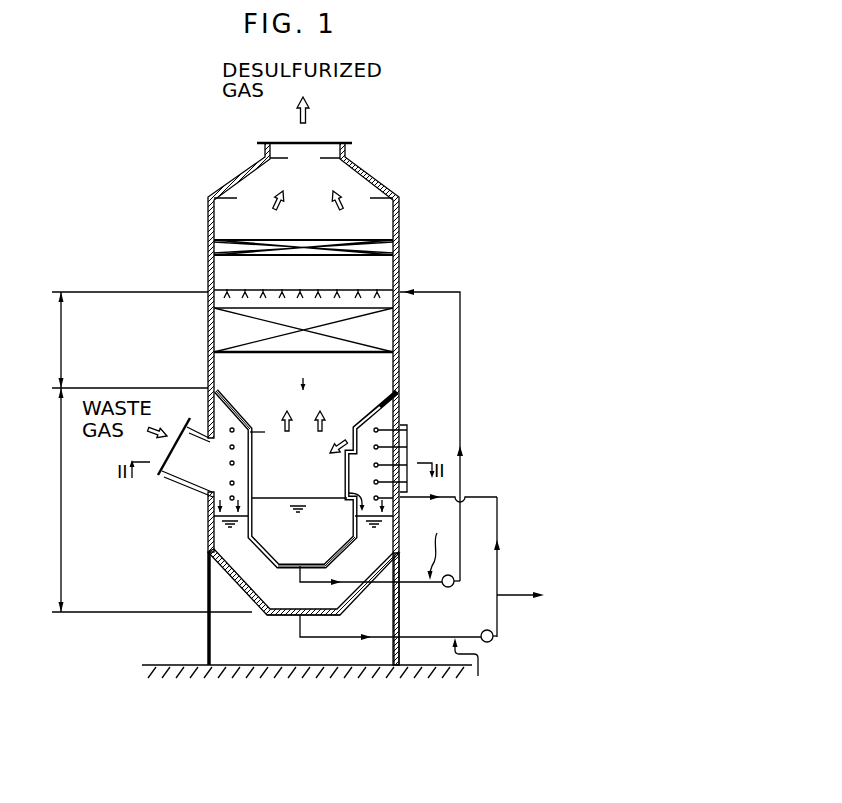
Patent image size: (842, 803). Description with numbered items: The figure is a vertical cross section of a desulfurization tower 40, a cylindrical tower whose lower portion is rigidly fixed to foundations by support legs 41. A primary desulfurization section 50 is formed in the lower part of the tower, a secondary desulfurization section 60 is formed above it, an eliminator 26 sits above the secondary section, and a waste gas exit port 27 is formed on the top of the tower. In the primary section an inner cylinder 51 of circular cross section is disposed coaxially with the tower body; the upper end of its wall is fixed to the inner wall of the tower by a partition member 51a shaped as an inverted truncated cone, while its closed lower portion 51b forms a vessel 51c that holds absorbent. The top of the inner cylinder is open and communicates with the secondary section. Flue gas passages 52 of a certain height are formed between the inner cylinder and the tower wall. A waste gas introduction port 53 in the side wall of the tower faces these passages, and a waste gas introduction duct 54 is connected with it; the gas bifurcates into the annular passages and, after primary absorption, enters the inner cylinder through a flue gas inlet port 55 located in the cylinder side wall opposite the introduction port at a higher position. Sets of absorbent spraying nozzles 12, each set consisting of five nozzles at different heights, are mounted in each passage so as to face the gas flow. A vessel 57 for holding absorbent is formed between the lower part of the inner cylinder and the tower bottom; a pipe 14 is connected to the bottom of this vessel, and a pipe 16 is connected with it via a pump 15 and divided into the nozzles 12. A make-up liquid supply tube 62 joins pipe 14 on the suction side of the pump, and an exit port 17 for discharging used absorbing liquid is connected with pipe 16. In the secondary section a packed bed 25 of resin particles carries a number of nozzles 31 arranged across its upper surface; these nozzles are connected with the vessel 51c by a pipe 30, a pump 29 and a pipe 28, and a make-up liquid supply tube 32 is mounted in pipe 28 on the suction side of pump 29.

The absorbent spraying nozzles 12 is at (236, 447).
The pipe 14 is at (431, 640).
The pump 15 is at (494, 643).
The pipe 16 is at (500, 521).
The exit port 17 is at (509, 595).
The packed bed 25 is at (226, 312).
The eliminator 26 is at (236, 240).
The waste gas exit port 27 is at (322, 143).
The pipe 28 is at (413, 581).
The pump 29 is at (452, 590).
The pipe 30 is at (462, 333).
The nozzles 31 is at (386, 290).
The make-up liquid supply tube 32 is at (443, 542).
The desulfurization tower 40 is at (412, 241).
The support legs 41 is at (207, 639).
The primary desulfurization section 50 is at (141, 500).
The inner cylinder 51 is at (253, 470).
The partition member 51a is at (232, 372).
The closed lower portion 51b is at (350, 537).
The vessel 51c is at (268, 540).
The flue gas passages 52 is at (408, 450).
The waste gas introduction port 53 is at (190, 466).
The waste gas introduction duct 54 is at (182, 457).
The flue gas inlet port 55 is at (402, 493).
The vessel 57 is at (278, 617).
The secondary desulfurization section 60 is at (119, 340).
The make-up liquid supply tube 62 is at (483, 667).